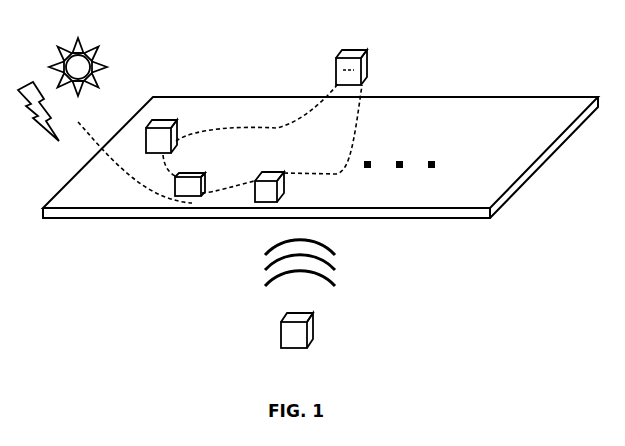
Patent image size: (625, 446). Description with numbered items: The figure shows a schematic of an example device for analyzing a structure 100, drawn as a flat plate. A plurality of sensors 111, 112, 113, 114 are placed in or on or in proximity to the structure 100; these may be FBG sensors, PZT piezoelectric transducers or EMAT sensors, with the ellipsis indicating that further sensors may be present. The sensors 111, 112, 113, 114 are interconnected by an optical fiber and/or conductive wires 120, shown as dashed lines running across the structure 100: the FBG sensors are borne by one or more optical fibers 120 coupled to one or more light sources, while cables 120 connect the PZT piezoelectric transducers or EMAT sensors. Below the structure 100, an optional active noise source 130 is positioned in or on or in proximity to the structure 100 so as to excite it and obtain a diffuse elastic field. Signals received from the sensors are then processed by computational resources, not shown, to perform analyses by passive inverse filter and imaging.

The structure 100 is at (197, 96).
The sensor 111 is at (178, 128).
The sensor 112 is at (203, 171).
The sensor 113 is at (279, 171).
The sensor 114 is at (364, 52).
The optical fiber and/or conductive wires 120 is at (76, 119).
The noise source 130 is at (315, 339).